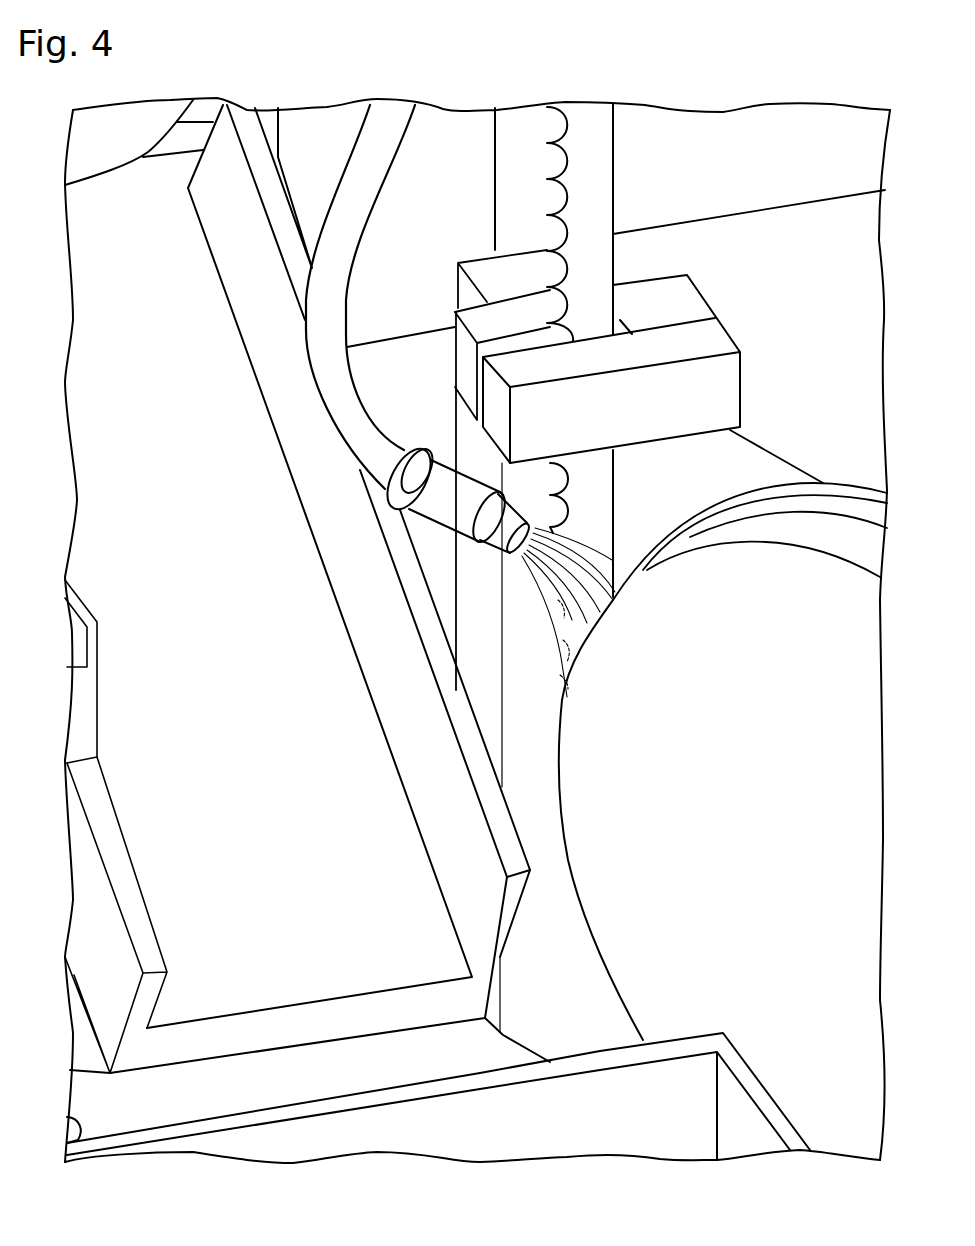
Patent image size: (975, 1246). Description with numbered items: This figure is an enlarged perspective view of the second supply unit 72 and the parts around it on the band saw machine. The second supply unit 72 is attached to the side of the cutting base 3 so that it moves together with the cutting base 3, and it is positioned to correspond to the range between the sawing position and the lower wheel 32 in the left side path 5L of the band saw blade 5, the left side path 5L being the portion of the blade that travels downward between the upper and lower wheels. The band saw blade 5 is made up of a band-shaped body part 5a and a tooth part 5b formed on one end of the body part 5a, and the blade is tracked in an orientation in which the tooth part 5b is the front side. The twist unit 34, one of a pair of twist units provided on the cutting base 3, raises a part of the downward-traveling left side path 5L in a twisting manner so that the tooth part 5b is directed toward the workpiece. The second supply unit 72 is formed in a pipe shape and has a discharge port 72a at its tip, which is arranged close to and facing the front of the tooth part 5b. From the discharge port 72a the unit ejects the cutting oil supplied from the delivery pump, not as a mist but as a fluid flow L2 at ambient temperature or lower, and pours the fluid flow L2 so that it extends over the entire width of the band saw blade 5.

The cutting base 3 is at (743, 470).
The band saw blade 5 is at (616, 141).
The body part 5a is at (601, 187).
The tooth part 5b is at (546, 168).
The left side path 5L is at (627, 255).
The lower wheel 32 is at (638, 976).
The twist unit 34 is at (467, 363).
The second supply unit 72 is at (335, 394).
The discharge port 72a is at (521, 556).
The fluid flow L2 is at (597, 542).